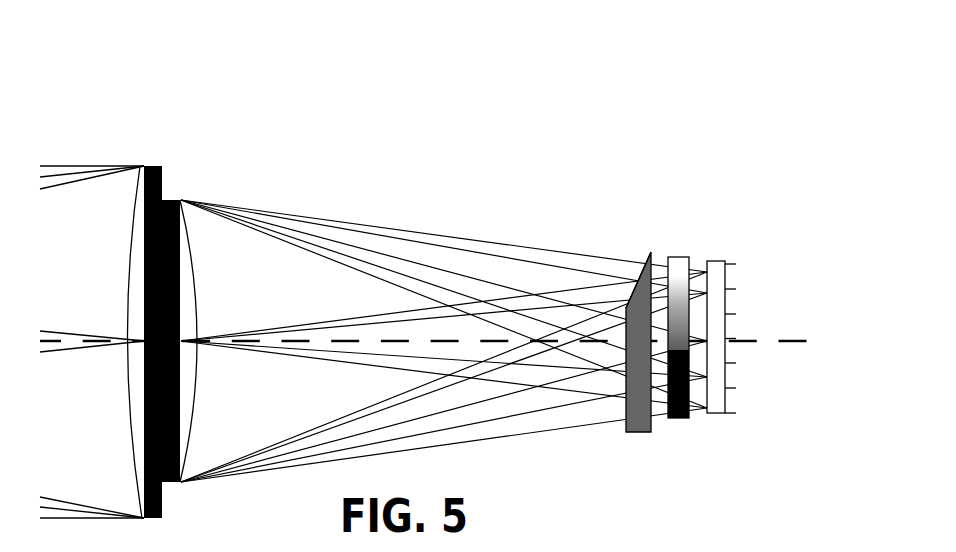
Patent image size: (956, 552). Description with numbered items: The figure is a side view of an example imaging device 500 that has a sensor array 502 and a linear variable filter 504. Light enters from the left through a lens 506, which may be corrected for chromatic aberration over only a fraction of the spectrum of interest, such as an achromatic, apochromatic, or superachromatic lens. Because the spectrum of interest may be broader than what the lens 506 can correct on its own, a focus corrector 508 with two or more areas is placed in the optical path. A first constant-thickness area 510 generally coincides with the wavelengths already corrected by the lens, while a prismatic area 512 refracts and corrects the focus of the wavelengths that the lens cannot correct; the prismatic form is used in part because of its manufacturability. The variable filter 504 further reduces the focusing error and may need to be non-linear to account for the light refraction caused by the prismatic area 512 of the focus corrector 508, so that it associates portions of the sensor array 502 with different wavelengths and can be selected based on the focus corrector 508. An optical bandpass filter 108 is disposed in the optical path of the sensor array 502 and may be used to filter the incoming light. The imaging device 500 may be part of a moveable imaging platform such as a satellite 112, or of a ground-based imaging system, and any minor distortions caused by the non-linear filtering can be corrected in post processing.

The imaging device 500 is at (184, 69).
The lens 506 is at (145, 167).
The first constant-thickness area 510 is at (624, 431).
The prismatic area 512 is at (613, 248).
The satellite 112 is at (712, 134).
The linear variable filter 504 is at (680, 256).
The focus corrector 508 is at (653, 440).
The sensor array 502 is at (727, 416).
The optical bandpass filter 108 is at (737, 248).